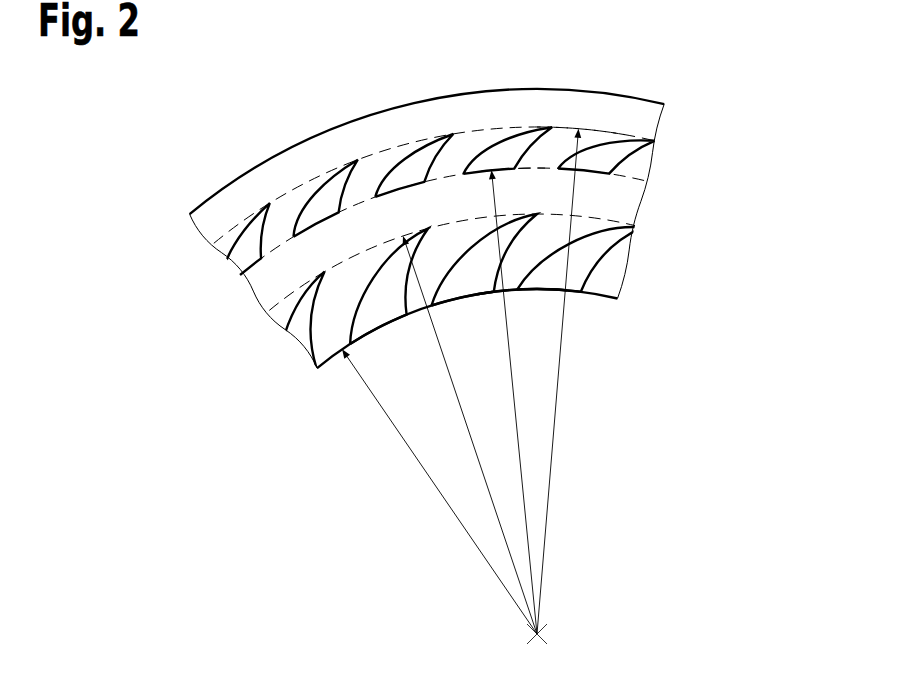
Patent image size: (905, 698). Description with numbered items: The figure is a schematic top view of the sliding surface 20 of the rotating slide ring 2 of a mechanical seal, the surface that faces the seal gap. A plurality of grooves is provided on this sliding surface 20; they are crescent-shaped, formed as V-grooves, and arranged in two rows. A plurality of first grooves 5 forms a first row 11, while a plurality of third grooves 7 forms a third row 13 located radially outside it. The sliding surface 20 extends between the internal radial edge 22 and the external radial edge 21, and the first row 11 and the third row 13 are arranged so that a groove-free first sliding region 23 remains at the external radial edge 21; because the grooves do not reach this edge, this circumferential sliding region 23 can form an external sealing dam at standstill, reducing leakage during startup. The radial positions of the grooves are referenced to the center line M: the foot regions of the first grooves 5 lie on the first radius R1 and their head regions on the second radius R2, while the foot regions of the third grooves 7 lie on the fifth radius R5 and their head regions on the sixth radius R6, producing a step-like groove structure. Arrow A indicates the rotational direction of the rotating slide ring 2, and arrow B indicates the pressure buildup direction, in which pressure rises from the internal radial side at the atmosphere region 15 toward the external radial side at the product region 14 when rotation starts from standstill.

The rotating slide ring 2 is at (212, 126).
The first grooves 5 is at (303, 323).
The third grooves 7 is at (250, 233).
The first row of first grooves 11 is at (642, 251).
The third row of third grooves 13 is at (658, 160).
The product region 14 is at (279, 96).
The atmosphere region 15 is at (628, 398).
The sliding surface of rotating slide ring 20 is at (470, 154).
The external radial edge of the rotating slide ring 21 is at (412, 108).
The internal radial edge of rotating slide ring 22 is at (540, 290).
The first sliding region of the sliding surface 23 is at (586, 113).
The rotational direction A is at (380, 89).
The pressure buildup direction B is at (190, 258).
The first radius of foot regions R1 is at (375, 400).
The second radius of head regions R2 is at (480, 463).
The fifth radius R5 is at (523, 498).
The sixth radius R6 is at (553, 447).
The center line M is at (546, 633).